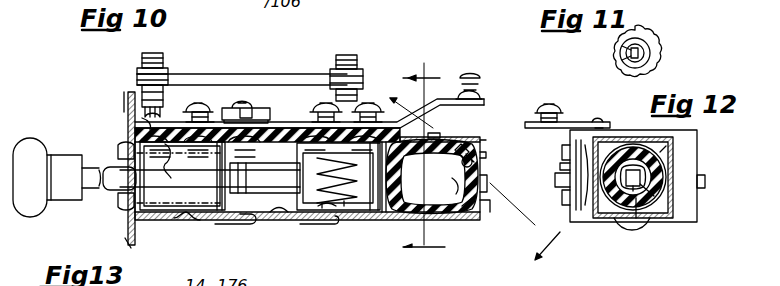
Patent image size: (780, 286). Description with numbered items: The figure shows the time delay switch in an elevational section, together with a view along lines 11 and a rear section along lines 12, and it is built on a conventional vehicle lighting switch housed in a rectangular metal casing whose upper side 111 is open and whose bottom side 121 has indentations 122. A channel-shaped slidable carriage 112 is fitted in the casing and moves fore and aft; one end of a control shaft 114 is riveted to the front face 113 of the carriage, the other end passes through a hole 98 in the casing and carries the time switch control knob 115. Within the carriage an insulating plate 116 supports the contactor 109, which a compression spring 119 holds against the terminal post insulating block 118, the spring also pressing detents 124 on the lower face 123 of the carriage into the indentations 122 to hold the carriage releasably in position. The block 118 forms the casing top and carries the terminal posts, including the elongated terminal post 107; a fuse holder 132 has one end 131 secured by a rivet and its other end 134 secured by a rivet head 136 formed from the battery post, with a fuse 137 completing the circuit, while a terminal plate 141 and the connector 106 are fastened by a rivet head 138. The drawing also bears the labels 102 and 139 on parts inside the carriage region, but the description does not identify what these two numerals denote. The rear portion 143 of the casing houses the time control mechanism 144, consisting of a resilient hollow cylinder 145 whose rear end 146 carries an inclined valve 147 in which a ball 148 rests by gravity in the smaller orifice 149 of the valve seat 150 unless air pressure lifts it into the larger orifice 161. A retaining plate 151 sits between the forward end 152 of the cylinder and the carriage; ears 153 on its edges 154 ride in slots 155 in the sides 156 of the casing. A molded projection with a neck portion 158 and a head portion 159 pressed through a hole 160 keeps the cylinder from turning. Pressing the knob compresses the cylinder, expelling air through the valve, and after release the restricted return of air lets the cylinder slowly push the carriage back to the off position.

In FIG. 10, the hole 98 is at (128, 150).
In FIG. 10, the cup member 102 is at (213, 184).
In FIG. 12, the connector 106 is at (576, 122).
In FIG. 10, the elongated terminal post 107 is at (262, 198).
In FIG. 10, the contactor 109 is at (328, 141).
In FIG. 10, the upper side 111 is at (123, 115).
In FIG. 10, the slidable carriage 112 is at (311, 206).
In FIG. 10, the front face 113 is at (240, 216).
In FIG. 10, the control shaft 114 is at (198, 220).
In FIG. 10, the time switch control knob 115 is at (29, 138).
In FIG. 10, the insulating plate 116 is at (350, 206).
In FIG. 10, the terminal post insulating block 118 is at (171, 121).
In FIG. 10, the compression spring 119 is at (343, 194).
In FIG. 10, the bottom side 121 is at (146, 218).
In FIG. 10, the indentations 122 is at (175, 224).
In FIG. 10, the lower face 123 is at (324, 204).
In FIG. 10, the detents 124 is at (347, 202).
In FIG. 10, the fuse holder end 131 is at (356, 56).
In FIG. 10, the fuse holder 132 is at (165, 53).
In FIG. 10, the fuse holder end 134 is at (142, 64).
In FIG. 10, the rivet head 136 is at (150, 118).
In FIG. 10, the fuse 137 is at (280, 76).
In FIG. 12, the rivet head 138 is at (597, 124).
In FIG. 10, the contact arm 139 is at (164, 153).
In FIG. 12, the terminal plate 141 is at (534, 126).
In FIG. 10, the rear portion 143 is at (484, 136).
In FIG. 12, the rear portion 143 is at (666, 148).
In FIG. 12, the time control mechanism 144 is at (654, 204).
In FIG. 12, the hollow cylinder 145 is at (657, 162).
In FIG. 10, the rear end 146 is at (489, 212).
In FIG. 10, the valve 147 is at (486, 157).
In FIG. 10, the ball 148 is at (432, 177).
In FIG. 11, the ball 148 is at (628, 72).
In FIG. 10, the smaller orifice 149 is at (452, 182).
In FIG. 11, the valve seat 150 is at (616, 53).
In FIG. 10, the retaining plate 151 is at (486, 174).
In FIG. 10, the forward end 152 is at (384, 216).
In FIG. 12, the forward end 152 is at (570, 160).
In FIG. 12, the ears 153 is at (563, 180).
In FIG. 12, the edges 154 is at (568, 172).
In FIG. 10, the slots 155 is at (282, 217).
In FIG. 12, the slots 155 is at (566, 192).
In FIG. 12, the sides 156 is at (704, 167).
In FIG. 10, the neck portion 158 is at (470, 206).
In FIG. 10, the head portion 159 is at (530, 227).
In FIG. 12, the head portion 159 is at (627, 195).
In FIG. 12, the hole 160 is at (645, 186).
In FIG. 10, the larger orifice 161 is at (450, 136).
In FIG. 10, the section line 11— 11 is at (474, 168).
In FIG. 10, the section line 12— 12 is at (424, 166).